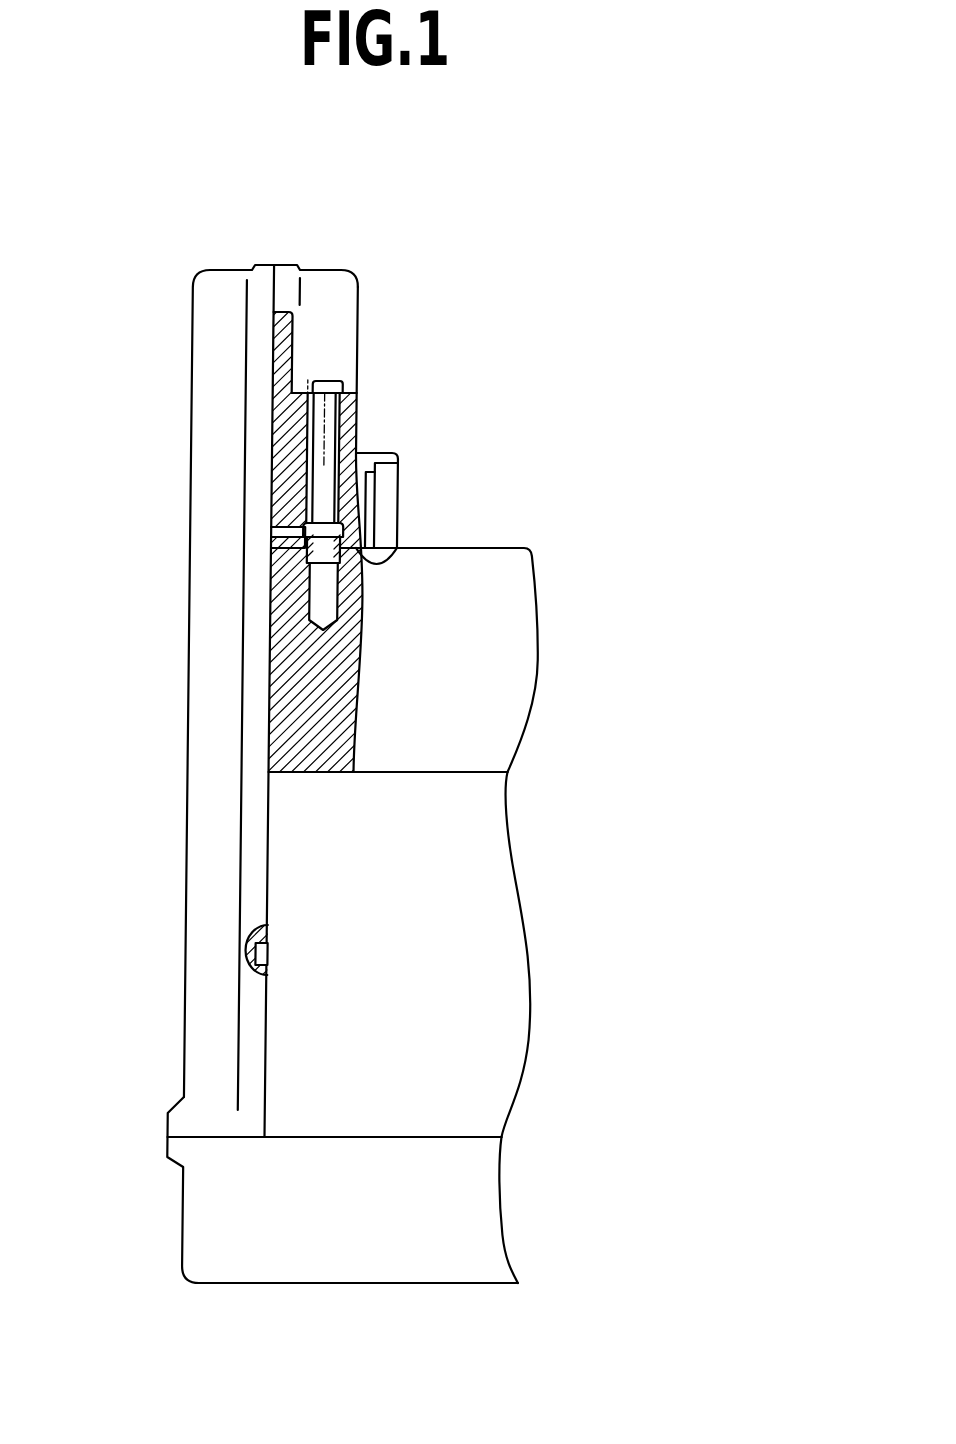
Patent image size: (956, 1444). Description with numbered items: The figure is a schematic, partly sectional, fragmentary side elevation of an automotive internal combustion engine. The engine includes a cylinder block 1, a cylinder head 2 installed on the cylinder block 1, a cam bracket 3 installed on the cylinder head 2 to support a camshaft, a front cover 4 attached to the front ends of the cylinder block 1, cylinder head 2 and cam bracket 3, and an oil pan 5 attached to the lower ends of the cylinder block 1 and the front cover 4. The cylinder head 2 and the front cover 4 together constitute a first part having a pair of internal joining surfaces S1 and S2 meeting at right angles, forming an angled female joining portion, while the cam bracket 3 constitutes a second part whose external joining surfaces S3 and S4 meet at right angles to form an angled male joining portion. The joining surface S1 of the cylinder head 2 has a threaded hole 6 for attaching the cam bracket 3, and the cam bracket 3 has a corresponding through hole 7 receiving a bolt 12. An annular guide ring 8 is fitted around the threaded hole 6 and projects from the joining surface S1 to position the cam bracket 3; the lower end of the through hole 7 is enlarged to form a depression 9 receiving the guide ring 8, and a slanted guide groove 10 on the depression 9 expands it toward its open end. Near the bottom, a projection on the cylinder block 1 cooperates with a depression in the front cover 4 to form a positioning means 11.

The cylinder block 1 is at (474, 858).
The cylinder head 2 is at (480, 672).
The cam bracket 3 is at (339, 337).
The front cover 4 is at (218, 737).
The oil pan 5 is at (468, 1200).
The threaded hole 6 is at (366, 588).
The through hole 7 is at (337, 418).
The guide ring 8 is at (346, 533).
The depression 9 is at (309, 538).
The slanted guide groove 10 is at (309, 547).
The positioning means 11 is at (256, 950).
The bolt 12 is at (335, 380).
The internal joining surface S1 is at (513, 547).
The internal joining surface S2 is at (294, 337).
The external joining surface S3 is at (368, 550).
The external joining surface S4 is at (276, 373).